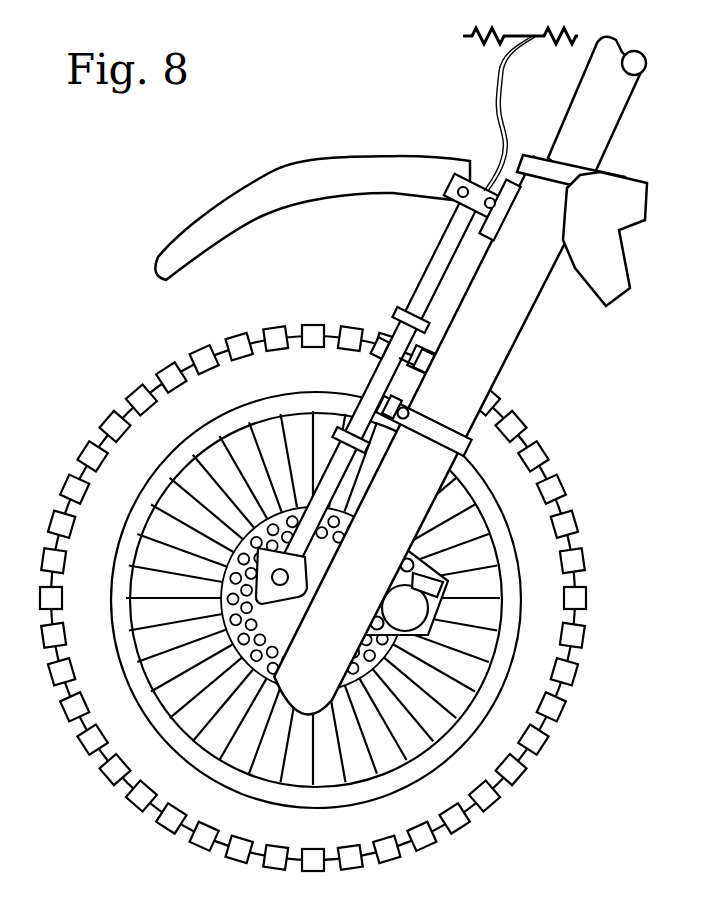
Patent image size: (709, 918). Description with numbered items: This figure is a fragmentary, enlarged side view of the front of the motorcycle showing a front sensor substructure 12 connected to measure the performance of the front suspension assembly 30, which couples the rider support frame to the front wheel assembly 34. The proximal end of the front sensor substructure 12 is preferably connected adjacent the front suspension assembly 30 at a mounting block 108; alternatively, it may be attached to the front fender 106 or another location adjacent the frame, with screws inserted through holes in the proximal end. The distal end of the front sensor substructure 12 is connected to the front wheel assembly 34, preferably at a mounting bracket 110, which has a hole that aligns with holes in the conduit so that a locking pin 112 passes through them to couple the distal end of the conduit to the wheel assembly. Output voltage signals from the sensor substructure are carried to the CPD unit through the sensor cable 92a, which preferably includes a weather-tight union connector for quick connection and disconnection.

The front sensor substructure 12 is at (400, 337).
The front suspension assembly 30 is at (516, 316).
The front wheel assembly 34 is at (614, 622).
The sensor cable 92a is at (497, 88).
The front fender 106 is at (388, 168).
The mounting block 108 is at (489, 175).
The mounting bracket 110 is at (300, 622).
The locking pin 112 is at (279, 569).